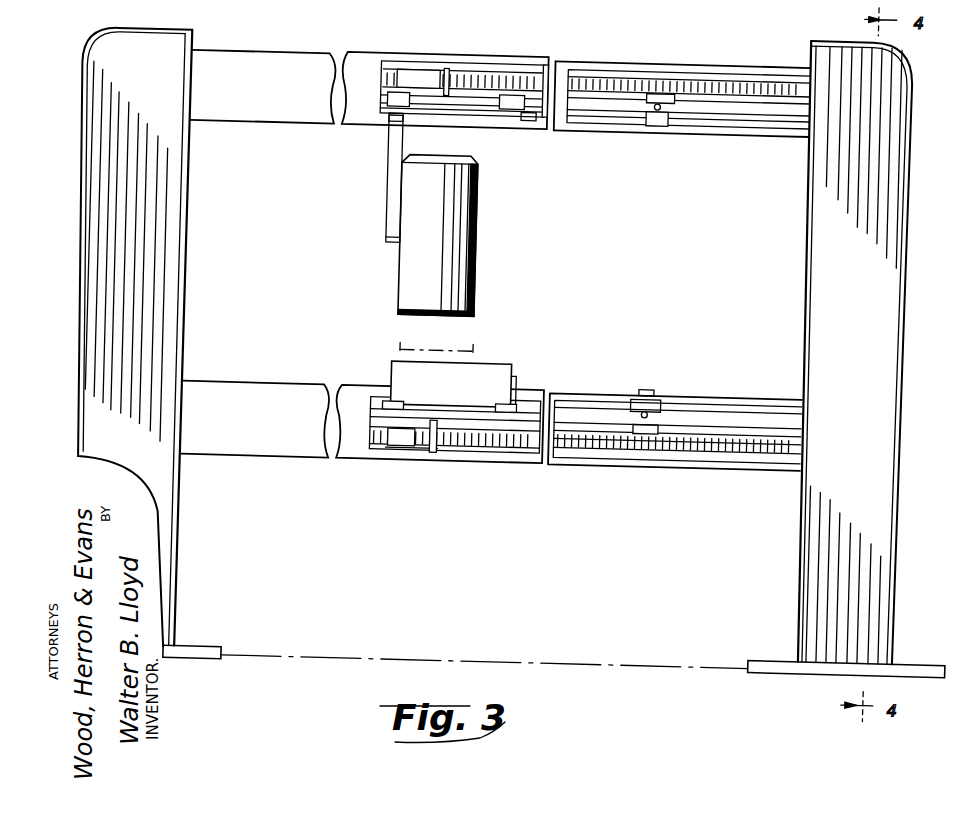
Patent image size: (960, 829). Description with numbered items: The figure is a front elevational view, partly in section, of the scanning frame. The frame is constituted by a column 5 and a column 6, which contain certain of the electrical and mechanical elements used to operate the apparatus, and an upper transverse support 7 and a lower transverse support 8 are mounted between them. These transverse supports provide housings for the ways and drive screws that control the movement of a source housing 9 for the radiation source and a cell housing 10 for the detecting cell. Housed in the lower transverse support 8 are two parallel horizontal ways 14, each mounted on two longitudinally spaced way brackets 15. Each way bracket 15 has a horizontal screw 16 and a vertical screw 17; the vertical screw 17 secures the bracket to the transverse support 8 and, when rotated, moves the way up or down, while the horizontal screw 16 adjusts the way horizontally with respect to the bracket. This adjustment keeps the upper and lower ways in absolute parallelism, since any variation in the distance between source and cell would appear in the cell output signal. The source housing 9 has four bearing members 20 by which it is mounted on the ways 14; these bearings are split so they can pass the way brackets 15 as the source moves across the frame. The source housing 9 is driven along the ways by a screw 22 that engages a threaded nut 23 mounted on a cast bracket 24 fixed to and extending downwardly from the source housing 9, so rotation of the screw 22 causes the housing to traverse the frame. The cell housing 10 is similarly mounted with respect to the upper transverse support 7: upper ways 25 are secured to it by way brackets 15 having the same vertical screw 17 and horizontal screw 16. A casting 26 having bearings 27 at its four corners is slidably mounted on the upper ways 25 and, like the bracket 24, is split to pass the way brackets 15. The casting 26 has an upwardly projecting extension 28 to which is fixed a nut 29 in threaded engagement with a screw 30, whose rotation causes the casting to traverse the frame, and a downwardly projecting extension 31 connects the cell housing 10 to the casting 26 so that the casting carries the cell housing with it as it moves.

The column 5 is at (180, 252).
The column 6 is at (902, 292).
The upper transverse support 7 is at (350, 66).
The lower transverse support 8 is at (348, 402).
The source housing 9 is at (480, 376).
The cell housing 10 is at (474, 250).
The way 14 is at (722, 410).
The way bracket 15 is at (666, 120).
The horizontal screw 16 is at (652, 86).
The vertical screw 17 is at (652, 132).
The bearing member 20 is at (404, 406).
The screw 22 is at (586, 450).
The threaded nut 23 is at (422, 452).
The cast bracket 24 is at (444, 456).
The upper way 25 is at (745, 112).
The casting 26 is at (470, 88).
The bearing 27 is at (390, 122).
The upwardly projecting extension 28 is at (441, 92).
The nut 29 is at (428, 72).
The screw 30 is at (539, 70).
The downwardly projecting extension 31 is at (390, 204).